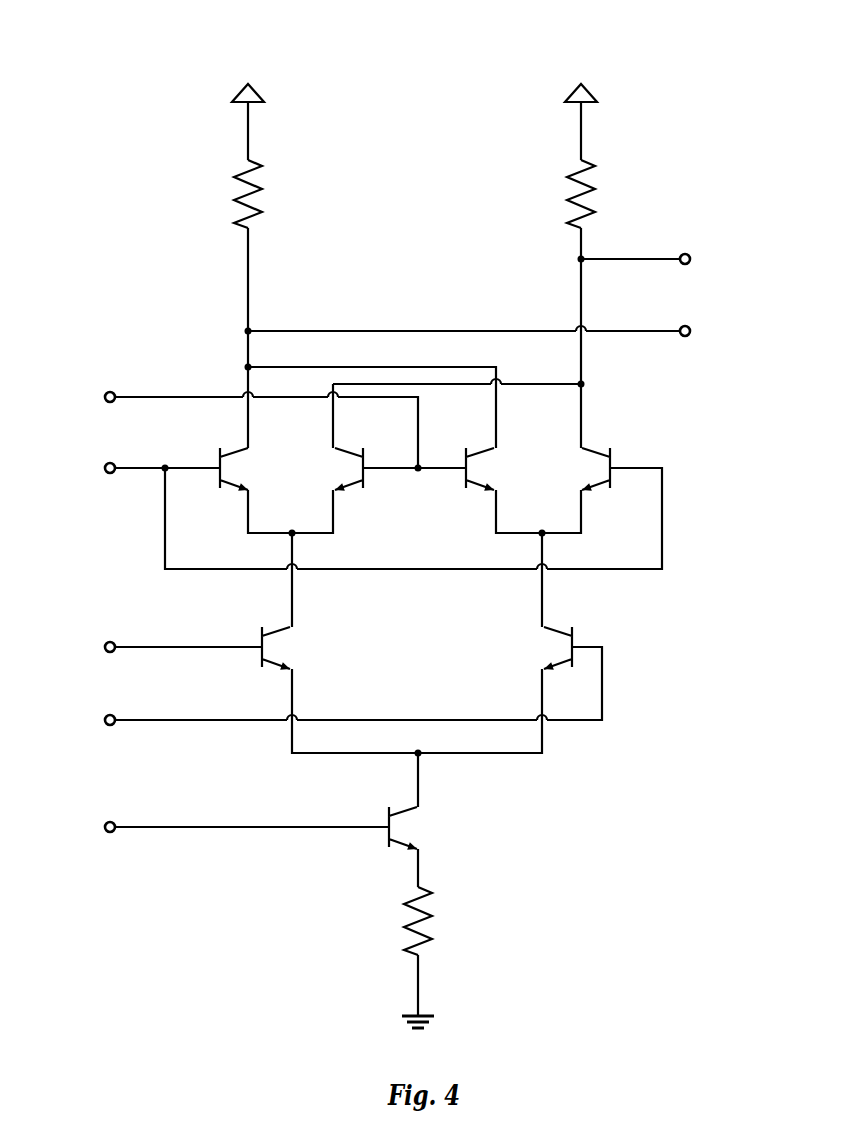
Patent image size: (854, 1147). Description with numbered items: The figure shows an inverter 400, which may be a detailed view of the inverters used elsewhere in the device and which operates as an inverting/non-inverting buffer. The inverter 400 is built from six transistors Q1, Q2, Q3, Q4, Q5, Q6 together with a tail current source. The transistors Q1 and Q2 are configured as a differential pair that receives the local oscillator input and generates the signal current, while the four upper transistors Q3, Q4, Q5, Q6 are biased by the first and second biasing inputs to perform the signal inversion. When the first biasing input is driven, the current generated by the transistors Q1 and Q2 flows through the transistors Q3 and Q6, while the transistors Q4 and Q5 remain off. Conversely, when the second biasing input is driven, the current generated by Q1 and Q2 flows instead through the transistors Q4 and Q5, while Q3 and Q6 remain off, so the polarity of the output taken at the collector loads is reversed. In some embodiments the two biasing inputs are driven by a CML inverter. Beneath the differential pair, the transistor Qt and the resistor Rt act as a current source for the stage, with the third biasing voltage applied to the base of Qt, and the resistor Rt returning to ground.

The inverter 400 is at (430, 521).
The transistor Q1 is at (289, 648).
The transistor Q2 is at (542, 648).
The transistor Q3 is at (244, 469).
The transistor Q4 is at (335, 469).
The transistor Q5 is at (492, 469).
The transistor Q6 is at (583, 469).
The transistor Qt is at (415, 828).
The resistor Rt is at (429, 921).